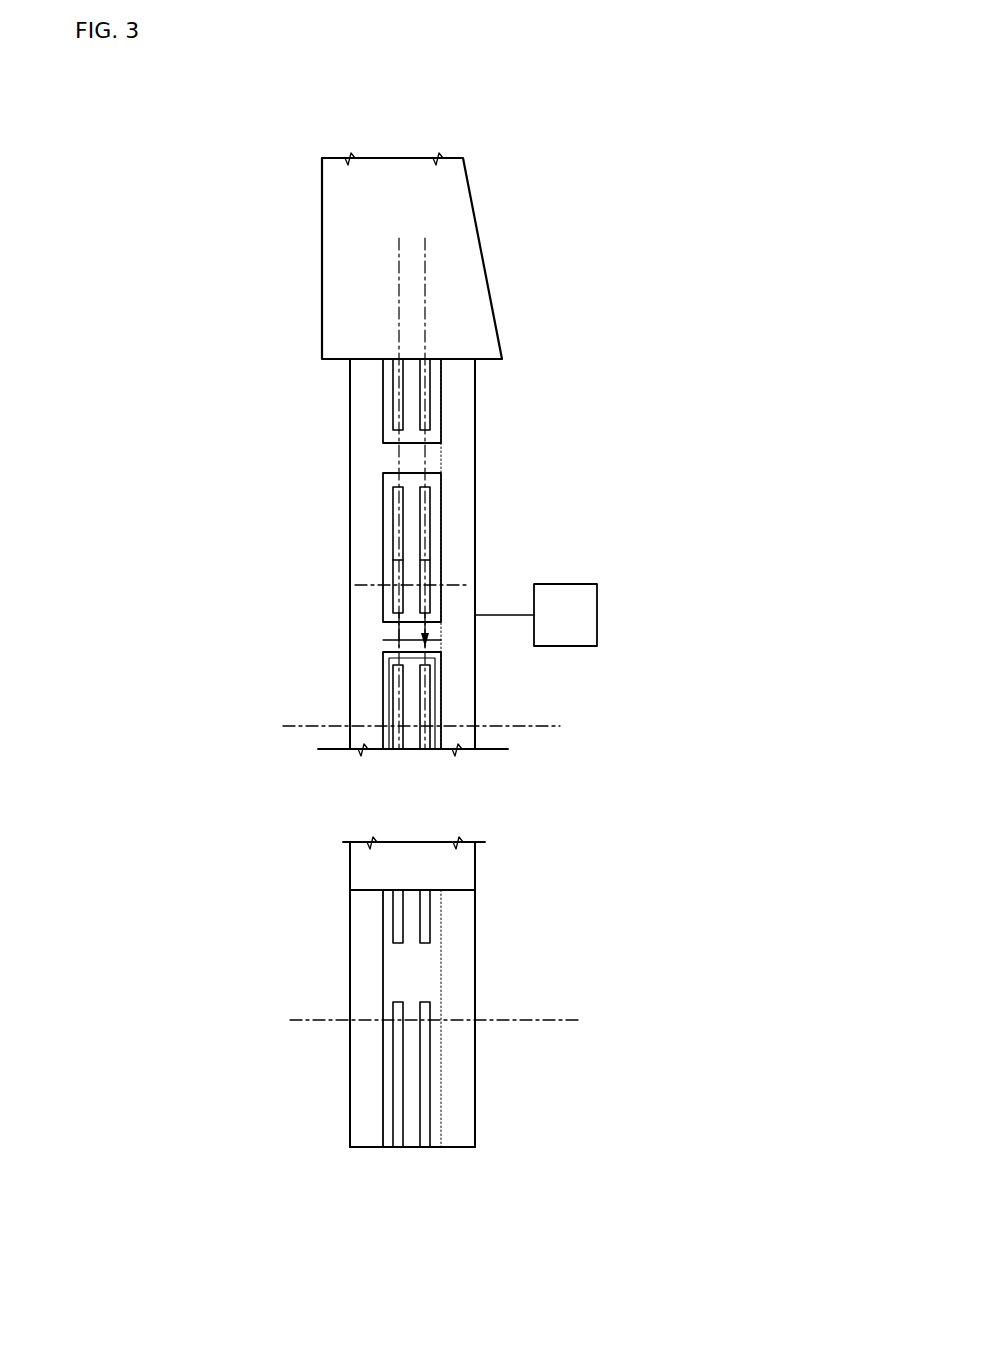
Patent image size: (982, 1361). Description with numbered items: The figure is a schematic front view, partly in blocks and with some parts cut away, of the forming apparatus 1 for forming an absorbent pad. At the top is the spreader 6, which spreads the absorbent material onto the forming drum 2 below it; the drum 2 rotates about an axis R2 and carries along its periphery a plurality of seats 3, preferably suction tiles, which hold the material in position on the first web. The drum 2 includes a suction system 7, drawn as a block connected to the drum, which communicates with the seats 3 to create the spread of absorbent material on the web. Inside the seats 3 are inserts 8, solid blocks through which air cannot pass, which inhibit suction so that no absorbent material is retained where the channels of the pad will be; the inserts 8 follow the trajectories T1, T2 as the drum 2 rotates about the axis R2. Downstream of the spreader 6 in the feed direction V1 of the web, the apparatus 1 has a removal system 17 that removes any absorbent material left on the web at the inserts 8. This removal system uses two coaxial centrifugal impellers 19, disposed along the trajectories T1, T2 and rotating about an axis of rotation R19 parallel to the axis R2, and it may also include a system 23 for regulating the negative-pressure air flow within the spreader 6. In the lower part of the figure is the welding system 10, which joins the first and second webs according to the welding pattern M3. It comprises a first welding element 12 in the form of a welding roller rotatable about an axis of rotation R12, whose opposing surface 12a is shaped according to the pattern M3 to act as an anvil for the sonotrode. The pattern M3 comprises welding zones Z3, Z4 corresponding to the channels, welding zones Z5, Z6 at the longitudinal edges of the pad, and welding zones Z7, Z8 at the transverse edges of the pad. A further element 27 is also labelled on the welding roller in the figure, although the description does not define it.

The forming apparatus 1 is at (642, 178).
The drum 2 is at (540, 495).
The seats 3 is at (432, 478).
The spreader 6 is at (466, 276).
The suction system 7 is at (571, 627).
The inserts 8 is at (428, 390).
The welding system 10 is at (548, 946).
The first welding element 12 is at (478, 1120).
The opposing surface 12a is at (368, 1040).
The removal system 17 is at (365, 602).
The centrifugal impeller 19 is at (420, 548).
The regulating system 23 is at (427, 897).
The intermediate region 27 is at (410, 965).
The trajectory T1 is at (397, 292).
The trajectory T2 is at (425, 262).
The feed direction V1 is at (197, 567).
The axis of rotation R19 is at (452, 585).
The axis R2 is at (545, 726).
The axis of rotation R12 is at (565, 1020).
The welding zone Z3 is at (425, 1108).
The welding zone Z4 is at (399, 1108).
The welding zone Z5 is at (455, 975).
The welding zone Z6 is at (367, 918).
The welding zone Z7 is at (428, 963).
The welding zone Z8 is at (418, 985).
The welding pattern M3 is at (365, 1085).